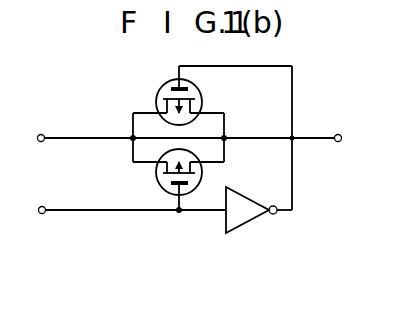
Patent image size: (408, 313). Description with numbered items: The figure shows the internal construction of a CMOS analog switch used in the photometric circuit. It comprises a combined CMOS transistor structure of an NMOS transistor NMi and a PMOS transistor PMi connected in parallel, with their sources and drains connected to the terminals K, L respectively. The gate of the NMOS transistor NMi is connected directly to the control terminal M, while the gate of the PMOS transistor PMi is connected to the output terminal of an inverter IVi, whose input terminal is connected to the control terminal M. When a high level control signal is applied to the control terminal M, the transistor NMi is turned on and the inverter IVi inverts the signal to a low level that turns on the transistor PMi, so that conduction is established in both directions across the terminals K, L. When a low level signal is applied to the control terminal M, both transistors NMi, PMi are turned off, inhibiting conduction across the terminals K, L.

The PMOS transistor PMi is at (199, 93).
The NMOS transistor NMi is at (162, 181).
The inverter IVi is at (252, 213).
The terminal K is at (37, 138).
The terminal L is at (342, 138).
The control terminal M is at (38, 210).